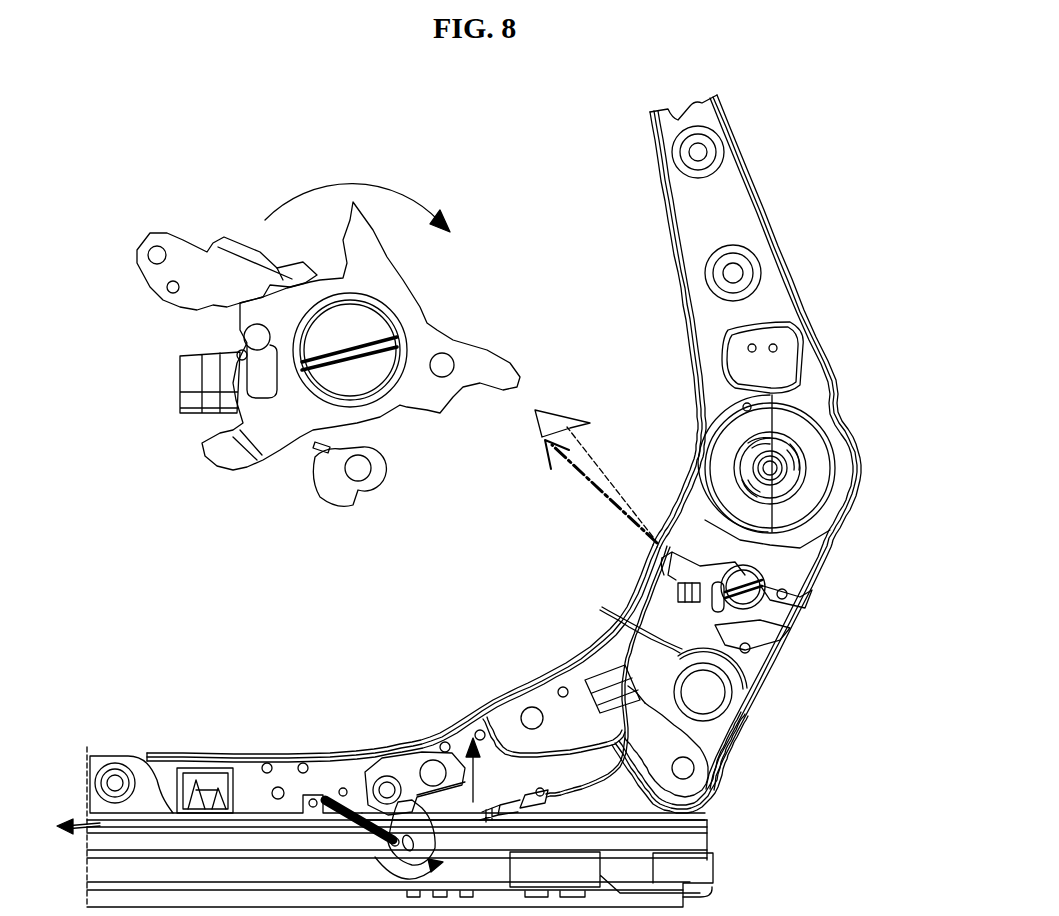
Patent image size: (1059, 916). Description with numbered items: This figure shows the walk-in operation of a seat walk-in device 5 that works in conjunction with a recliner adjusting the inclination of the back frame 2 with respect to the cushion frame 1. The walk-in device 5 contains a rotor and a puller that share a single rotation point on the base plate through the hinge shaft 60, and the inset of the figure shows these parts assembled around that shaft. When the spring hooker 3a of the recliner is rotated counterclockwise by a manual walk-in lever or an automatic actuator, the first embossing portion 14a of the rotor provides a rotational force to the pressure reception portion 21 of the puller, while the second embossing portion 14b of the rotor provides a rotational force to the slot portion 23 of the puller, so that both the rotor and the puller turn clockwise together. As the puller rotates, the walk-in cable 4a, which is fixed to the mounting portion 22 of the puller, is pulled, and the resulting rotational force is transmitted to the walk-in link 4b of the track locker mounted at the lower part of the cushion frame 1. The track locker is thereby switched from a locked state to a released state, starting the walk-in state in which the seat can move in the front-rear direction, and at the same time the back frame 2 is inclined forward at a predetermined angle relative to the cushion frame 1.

The cushion frame 1 is at (753, 668).
The back frame 2 is at (790, 300).
The spring hooker 3a is at (745, 425).
The walk-in cable 4a is at (575, 745).
The walk-in link 4b is at (400, 800).
The walk-in device 5 is at (867, 541).
The first embossing portion 14a is at (445, 375).
The second embossing portion 14b is at (250, 336).
The pressure reception portion 21 is at (429, 400).
The mounting portion 22 is at (222, 272).
The slot portion 23 is at (232, 358).
The hinge shaft 60 is at (370, 320).